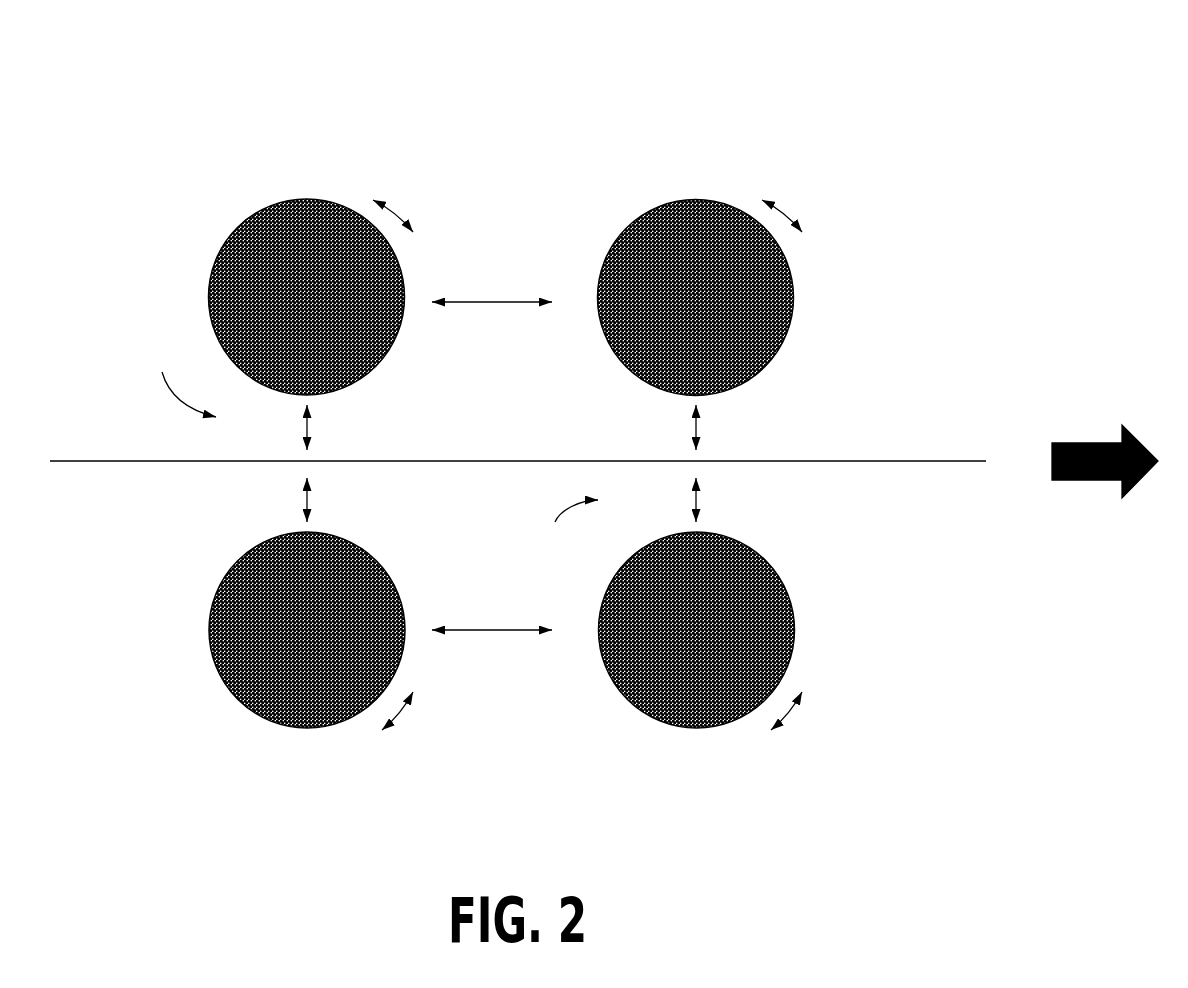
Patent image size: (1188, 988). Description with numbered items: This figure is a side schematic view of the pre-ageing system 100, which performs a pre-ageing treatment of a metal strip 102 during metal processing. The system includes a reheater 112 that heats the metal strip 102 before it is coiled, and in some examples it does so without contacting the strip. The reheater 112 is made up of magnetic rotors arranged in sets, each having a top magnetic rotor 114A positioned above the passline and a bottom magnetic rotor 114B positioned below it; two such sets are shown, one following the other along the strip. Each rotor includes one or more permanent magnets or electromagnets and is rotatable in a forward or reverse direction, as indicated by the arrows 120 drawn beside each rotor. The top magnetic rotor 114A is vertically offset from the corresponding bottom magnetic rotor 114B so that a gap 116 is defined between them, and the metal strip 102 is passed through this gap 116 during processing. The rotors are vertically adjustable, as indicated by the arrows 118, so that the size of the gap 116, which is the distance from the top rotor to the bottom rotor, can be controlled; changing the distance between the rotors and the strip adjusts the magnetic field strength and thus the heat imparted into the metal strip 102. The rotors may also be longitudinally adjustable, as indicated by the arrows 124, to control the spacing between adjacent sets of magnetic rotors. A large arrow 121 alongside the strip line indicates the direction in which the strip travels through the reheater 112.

The pre-ageing system 100 is at (420, 89).
The metal strip 102 is at (130, 460).
The reheater 112 is at (548, 109).
The top magnetic rotor 114A is at (243, 265).
The bottom magnetic rotor 114B is at (280, 705).
The gap 116 is at (372, 448).
The arrows 118 is at (309, 425).
The arrows 120 is at (397, 205).
The travel direction 121 is at (1078, 443).
The arrows 124 is at (487, 300).